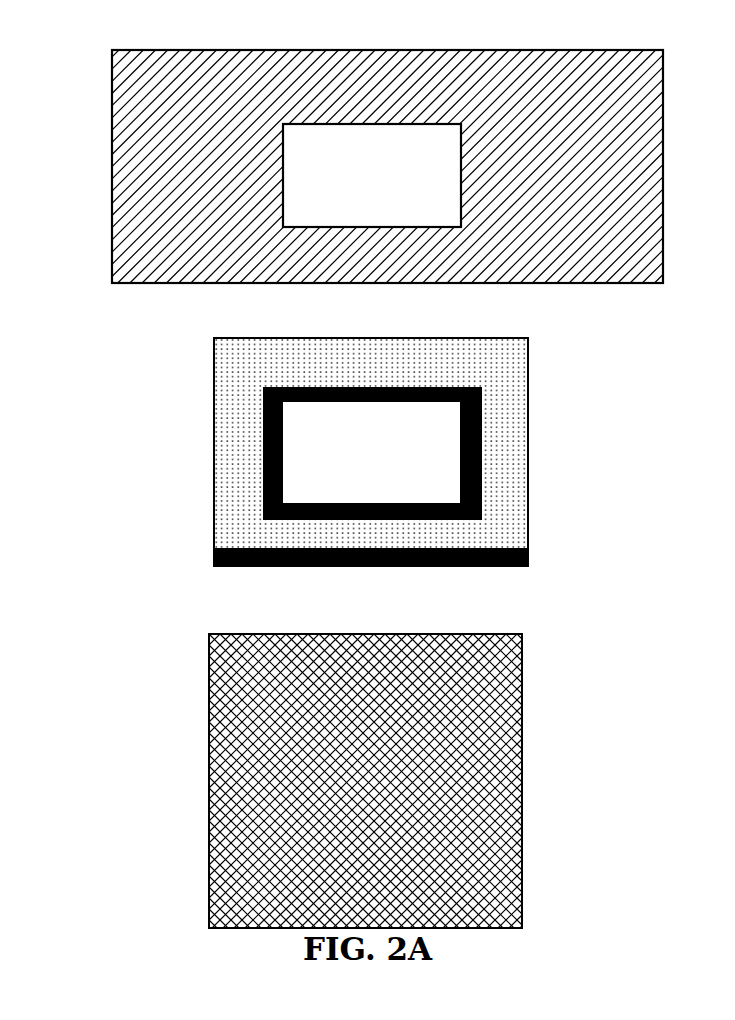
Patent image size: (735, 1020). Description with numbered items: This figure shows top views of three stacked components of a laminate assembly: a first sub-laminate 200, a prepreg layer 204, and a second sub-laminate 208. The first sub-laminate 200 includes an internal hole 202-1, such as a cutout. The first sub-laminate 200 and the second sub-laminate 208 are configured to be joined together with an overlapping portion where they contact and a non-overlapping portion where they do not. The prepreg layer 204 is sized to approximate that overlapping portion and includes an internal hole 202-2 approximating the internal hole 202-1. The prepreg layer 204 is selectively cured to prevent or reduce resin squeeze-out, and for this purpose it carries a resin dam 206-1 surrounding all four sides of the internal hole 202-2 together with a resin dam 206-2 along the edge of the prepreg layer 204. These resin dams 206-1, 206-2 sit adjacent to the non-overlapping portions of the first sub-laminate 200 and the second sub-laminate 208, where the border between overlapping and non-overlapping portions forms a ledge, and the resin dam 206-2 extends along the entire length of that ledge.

The first sub-laminate 200 is at (663, 165).
The internal hole 202-1 is at (371, 177).
The prepreg layer 204 is at (528, 448).
The internal hole 202-2 is at (375, 452).
The resin dam 206-1 is at (284, 453).
The resin dam 206-2 is at (528, 556).
The second sub-laminate 208 is at (522, 780).